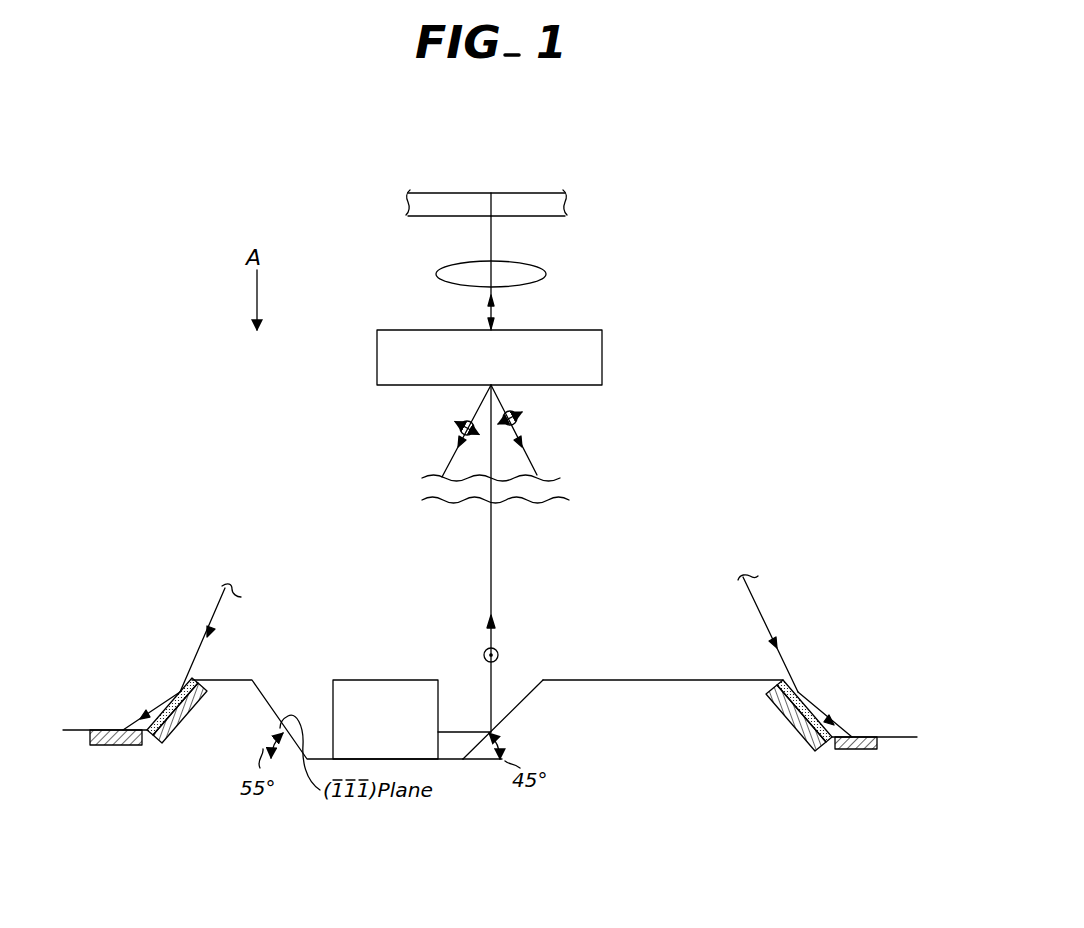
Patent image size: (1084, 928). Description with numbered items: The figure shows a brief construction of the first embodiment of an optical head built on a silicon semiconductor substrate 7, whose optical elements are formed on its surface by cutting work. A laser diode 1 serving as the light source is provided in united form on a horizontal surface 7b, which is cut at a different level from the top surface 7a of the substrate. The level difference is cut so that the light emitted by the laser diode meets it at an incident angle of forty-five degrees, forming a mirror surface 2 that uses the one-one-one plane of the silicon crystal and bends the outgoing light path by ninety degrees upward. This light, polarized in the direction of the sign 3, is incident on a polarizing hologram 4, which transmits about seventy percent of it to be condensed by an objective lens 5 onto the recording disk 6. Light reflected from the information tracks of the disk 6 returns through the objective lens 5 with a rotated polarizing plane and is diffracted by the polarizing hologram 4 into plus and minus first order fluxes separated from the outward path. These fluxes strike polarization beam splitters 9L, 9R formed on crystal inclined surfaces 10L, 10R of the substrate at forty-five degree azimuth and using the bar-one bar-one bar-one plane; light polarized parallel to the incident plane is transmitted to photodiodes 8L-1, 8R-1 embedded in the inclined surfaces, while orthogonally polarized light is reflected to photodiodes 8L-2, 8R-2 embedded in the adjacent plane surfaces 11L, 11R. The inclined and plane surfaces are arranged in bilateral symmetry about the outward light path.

The laser diode 1 is at (380, 680).
The mirror surface 2 is at (512, 708).
The sign indicating polarization direction 3 is at (497, 650).
The polarizing hologram 4 is at (603, 358).
The objective lens 5 is at (540, 277).
The recording medium (disk) 6 is at (567, 206).
The semiconductor substrate 7 is at (700, 718).
The top surface 7a is at (679, 680).
The horizontal surface 7b is at (451, 751).
The photodiode 8L-1 is at (173, 748).
The photodiode 8L-2 is at (112, 745).
The photodiode 8R-1 is at (792, 733).
The photodiode 8R-2 is at (855, 749).
The polarization beam splitter 9L is at (200, 706).
The polarization beam splitter 9R is at (806, 691).
The crystal inclined surface 10L is at (183, 682).
The crystal inclined surface 10R is at (797, 688).
The plane surface 11L is at (73, 730).
The plane surface 11R is at (905, 737).